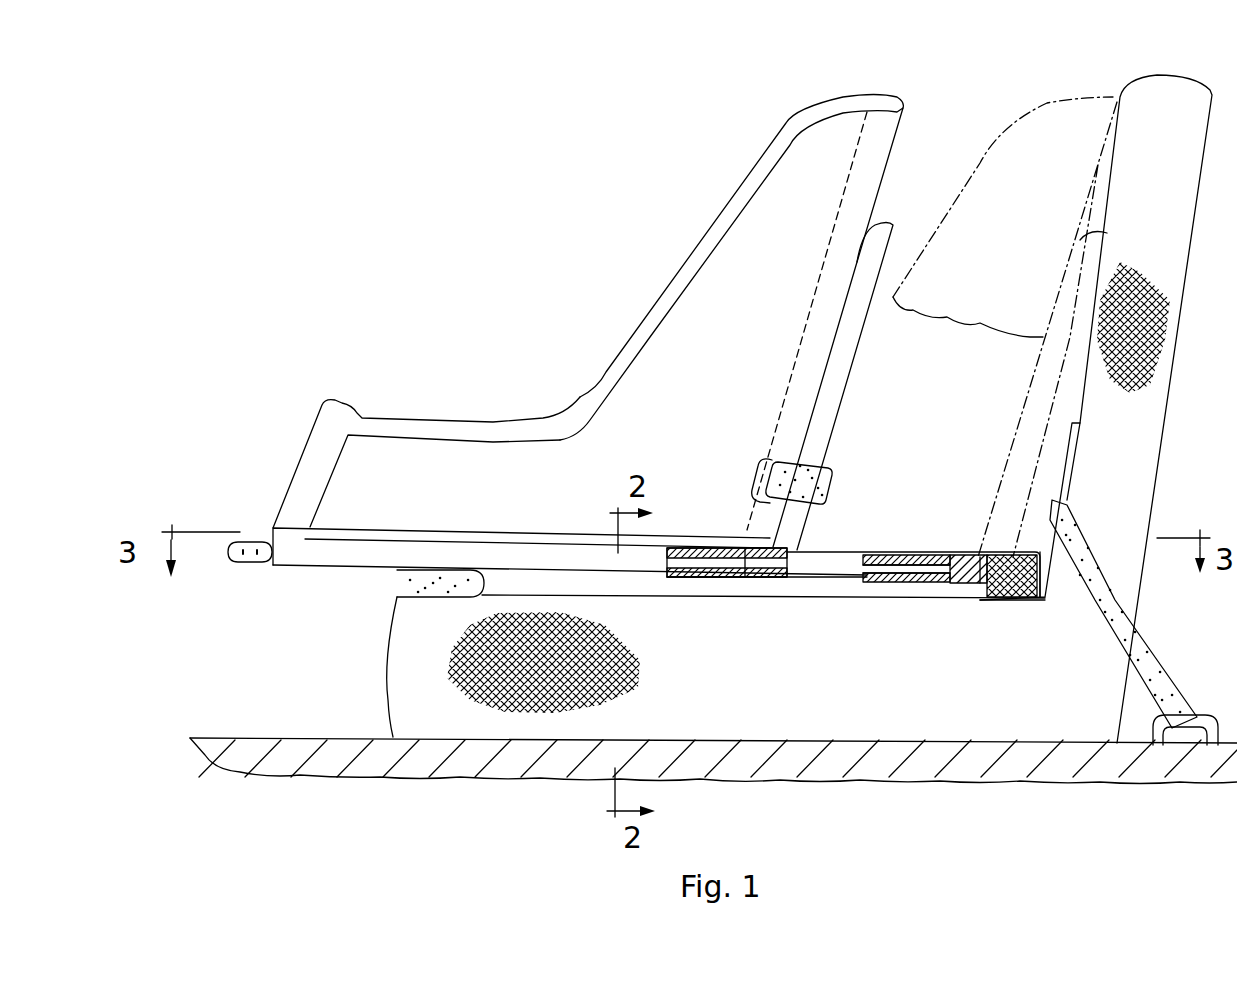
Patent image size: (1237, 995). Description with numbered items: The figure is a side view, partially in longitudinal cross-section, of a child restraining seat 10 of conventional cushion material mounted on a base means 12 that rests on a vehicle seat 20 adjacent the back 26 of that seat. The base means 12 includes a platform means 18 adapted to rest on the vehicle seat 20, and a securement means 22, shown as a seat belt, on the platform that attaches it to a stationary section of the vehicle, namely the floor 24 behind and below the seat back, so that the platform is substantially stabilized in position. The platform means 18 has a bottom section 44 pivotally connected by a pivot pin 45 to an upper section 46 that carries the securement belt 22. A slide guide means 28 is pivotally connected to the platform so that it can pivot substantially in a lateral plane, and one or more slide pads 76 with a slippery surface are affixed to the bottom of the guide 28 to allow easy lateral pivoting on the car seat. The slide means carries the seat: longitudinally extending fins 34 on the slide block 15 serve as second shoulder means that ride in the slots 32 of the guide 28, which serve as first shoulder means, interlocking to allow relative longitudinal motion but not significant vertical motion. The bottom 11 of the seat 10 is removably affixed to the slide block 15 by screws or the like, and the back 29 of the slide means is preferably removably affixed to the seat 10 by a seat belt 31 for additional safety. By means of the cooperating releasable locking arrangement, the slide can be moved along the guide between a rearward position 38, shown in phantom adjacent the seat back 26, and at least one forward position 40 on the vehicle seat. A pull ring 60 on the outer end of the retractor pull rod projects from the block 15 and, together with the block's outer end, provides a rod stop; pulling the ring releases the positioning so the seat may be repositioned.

The restraining seat 10 is at (632, 333).
The bottom 11 is at (517, 533).
The base means 12 is at (435, 515).
The slide block 15 is at (728, 580).
The platform means 18 is at (893, 612).
The vehicle seat 20 is at (818, 693).
The securement means 22 is at (1140, 632).
The floor 24 is at (318, 738).
The back 26 is at (1163, 208).
The slide guide means 28 is at (357, 568).
The back of slide means 29 is at (848, 357).
The seat belt 31 is at (827, 470).
The first shoulder means 32 is at (783, 557).
The second shoulder means 34 is at (690, 560).
The rearward position 38 is at (978, 120).
The forward position 40 is at (714, 172).
The bottom section 44 is at (970, 600).
The pivot pin 45 is at (1013, 550).
The upper section 46 is at (1077, 460).
The pull ring 60 is at (257, 563).
The slide pad 76 is at (397, 597).